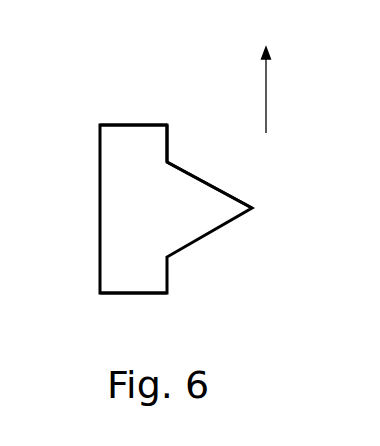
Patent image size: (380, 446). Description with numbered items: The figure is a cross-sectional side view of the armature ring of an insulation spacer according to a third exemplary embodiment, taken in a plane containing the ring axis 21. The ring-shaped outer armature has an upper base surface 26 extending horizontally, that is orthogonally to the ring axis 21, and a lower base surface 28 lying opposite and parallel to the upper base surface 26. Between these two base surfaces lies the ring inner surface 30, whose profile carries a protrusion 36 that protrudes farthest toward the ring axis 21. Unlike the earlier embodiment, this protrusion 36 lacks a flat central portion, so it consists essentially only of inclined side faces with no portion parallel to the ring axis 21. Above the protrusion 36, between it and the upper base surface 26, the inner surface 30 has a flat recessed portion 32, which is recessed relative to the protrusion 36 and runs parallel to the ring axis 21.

The ring axis 21 is at (266, 90).
The upper base surface 26 is at (132, 124).
The lower base surface 28 is at (132, 295).
The ring inner surface 30 is at (96, 92).
The flat recessed portion 32 is at (170, 133).
The protrusion 36 is at (220, 188).